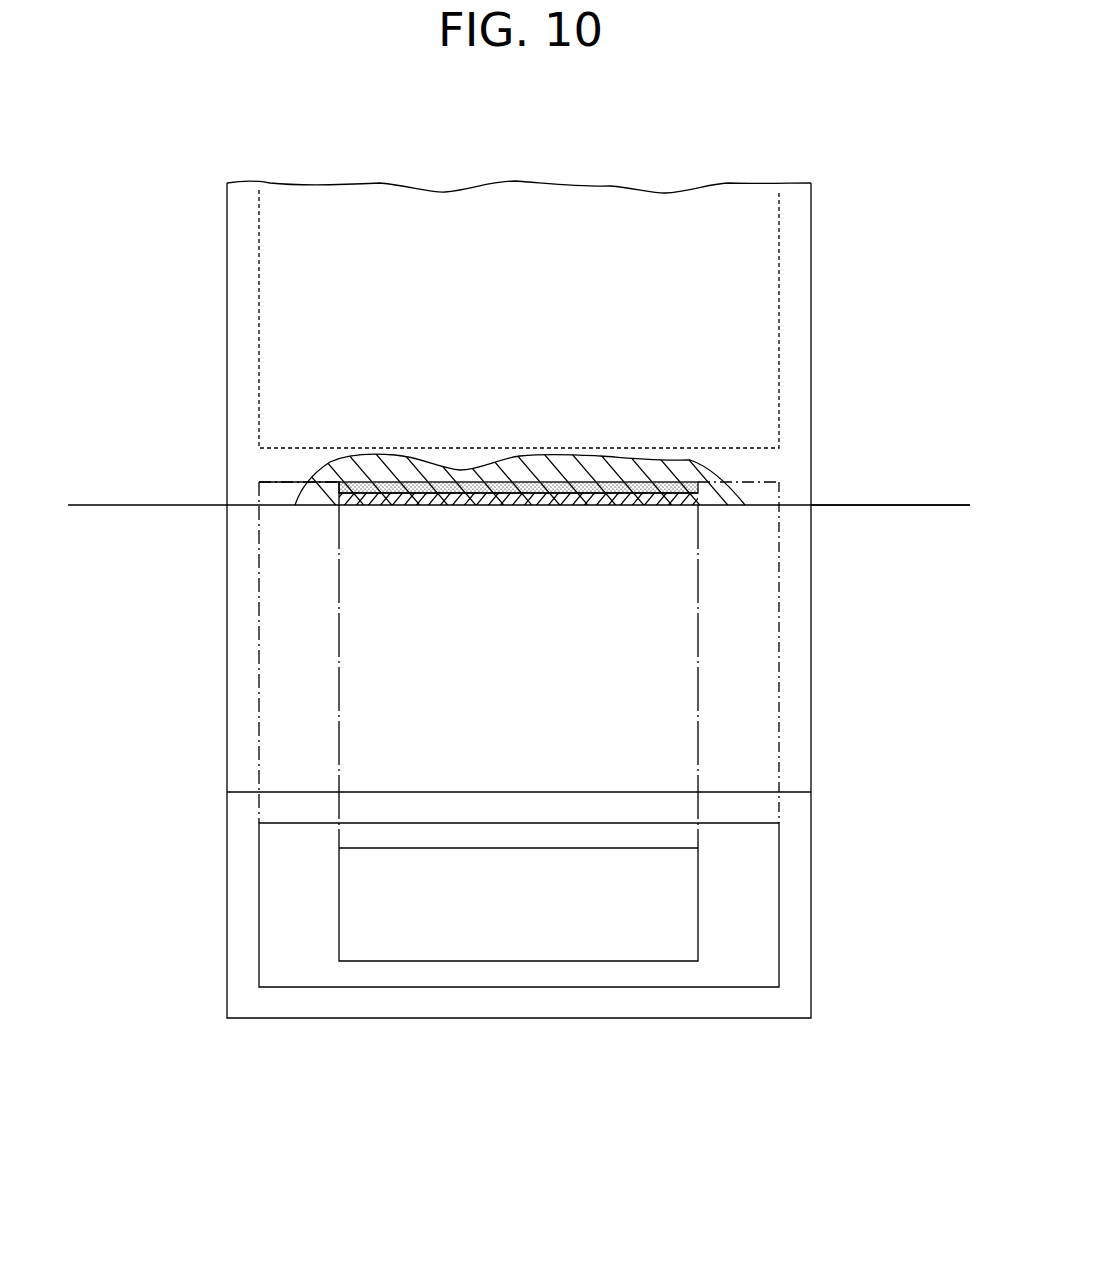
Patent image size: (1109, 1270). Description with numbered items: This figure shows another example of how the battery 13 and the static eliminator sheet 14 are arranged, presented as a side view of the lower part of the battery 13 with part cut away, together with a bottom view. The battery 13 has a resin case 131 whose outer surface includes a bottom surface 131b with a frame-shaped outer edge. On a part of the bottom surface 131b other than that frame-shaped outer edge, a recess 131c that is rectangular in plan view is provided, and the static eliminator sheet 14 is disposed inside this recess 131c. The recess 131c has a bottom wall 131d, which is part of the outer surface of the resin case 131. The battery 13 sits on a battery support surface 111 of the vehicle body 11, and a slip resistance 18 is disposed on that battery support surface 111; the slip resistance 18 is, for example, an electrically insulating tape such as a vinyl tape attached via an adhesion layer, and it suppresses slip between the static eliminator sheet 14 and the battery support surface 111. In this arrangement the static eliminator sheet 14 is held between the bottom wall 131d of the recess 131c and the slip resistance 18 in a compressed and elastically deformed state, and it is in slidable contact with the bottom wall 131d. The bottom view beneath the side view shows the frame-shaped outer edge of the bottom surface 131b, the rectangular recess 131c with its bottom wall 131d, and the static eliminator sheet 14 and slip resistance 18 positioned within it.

The battery 13 is at (852, 232).
The resin case 131 is at (528, 215).
The bottom surface 131b is at (792, 505).
The recess 131c is at (313, 503).
The bottom wall 131d is at (710, 484).
The static eliminator sheet 14 is at (388, 470).
The slip resistance 18 is at (647, 500).
The vehicle body 11 is at (125, 496).
The battery support surface 111 is at (935, 505).